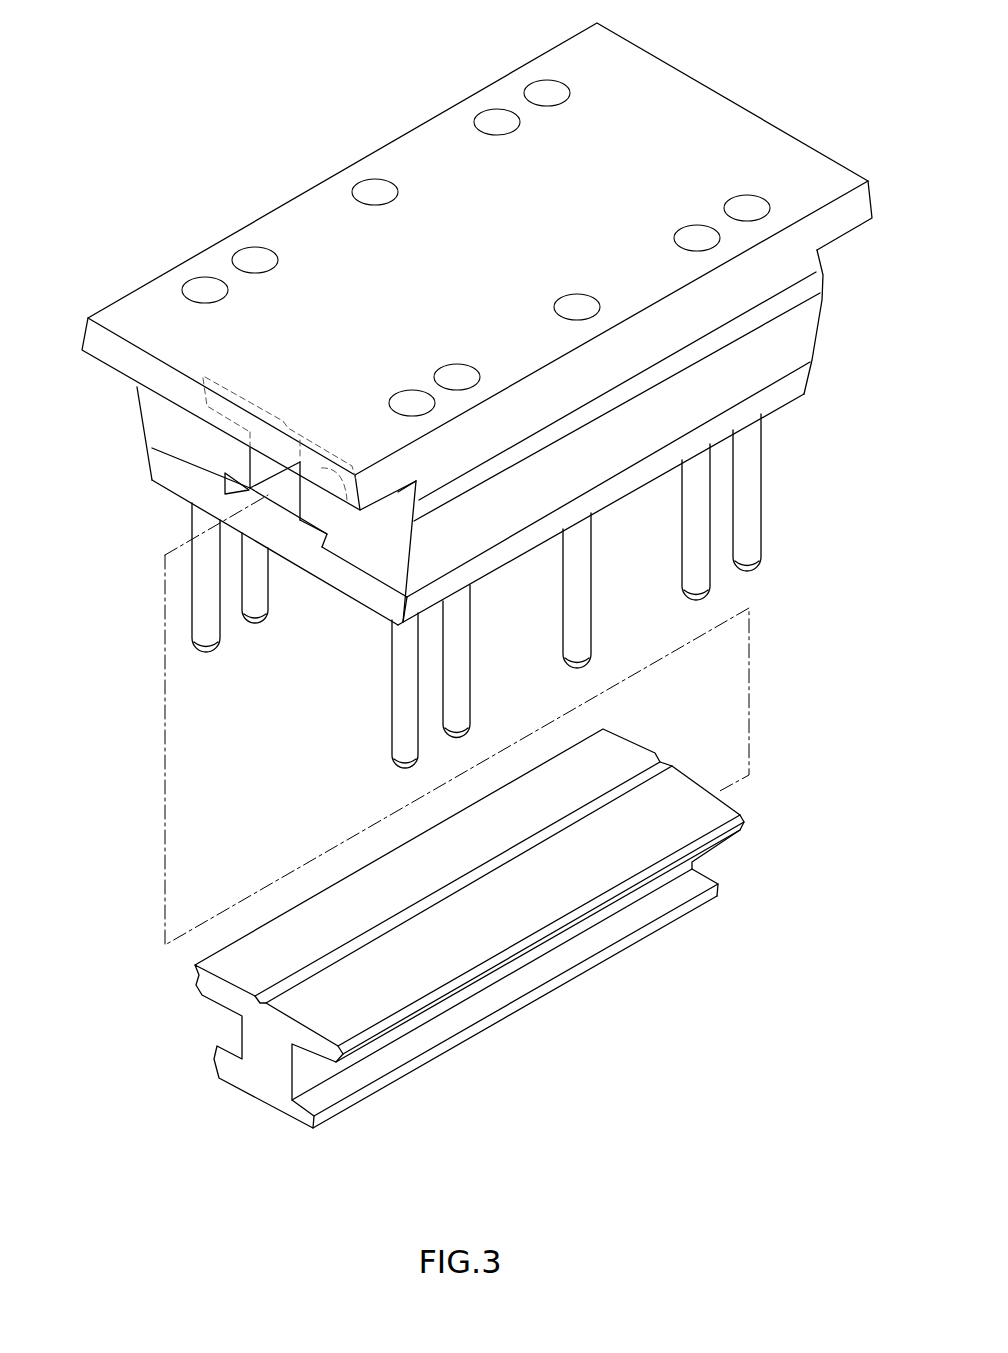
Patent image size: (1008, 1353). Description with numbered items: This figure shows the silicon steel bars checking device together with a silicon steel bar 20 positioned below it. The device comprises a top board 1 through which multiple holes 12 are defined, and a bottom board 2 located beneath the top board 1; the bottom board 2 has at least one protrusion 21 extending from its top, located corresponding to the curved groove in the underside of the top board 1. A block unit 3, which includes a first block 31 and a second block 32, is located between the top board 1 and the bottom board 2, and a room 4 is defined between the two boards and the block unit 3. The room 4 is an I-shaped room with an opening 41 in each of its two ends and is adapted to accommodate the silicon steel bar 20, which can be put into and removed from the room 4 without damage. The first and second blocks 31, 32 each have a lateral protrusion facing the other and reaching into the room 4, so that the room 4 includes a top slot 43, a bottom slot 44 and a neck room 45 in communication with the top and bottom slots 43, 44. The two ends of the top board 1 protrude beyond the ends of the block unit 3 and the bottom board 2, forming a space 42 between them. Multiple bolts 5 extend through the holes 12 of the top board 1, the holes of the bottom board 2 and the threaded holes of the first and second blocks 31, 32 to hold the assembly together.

The top board 1 is at (442, 157).
The holes 12 is at (488, 127).
The bottom board 2 is at (155, 468).
The block unit 3 is at (700, 424).
The first block 31 is at (155, 418).
The second block 32 is at (743, 387).
The room 4 is at (282, 647).
The opening 41 is at (232, 503).
The space 42 is at (392, 553).
The top slot 43 is at (347, 500).
The bottom slot 44 is at (302, 527).
The neck room 45 is at (293, 483).
The protrusion 21 is at (268, 512).
The bolts 5 is at (583, 570).
The silicon steel bar 20 is at (270, 1079).